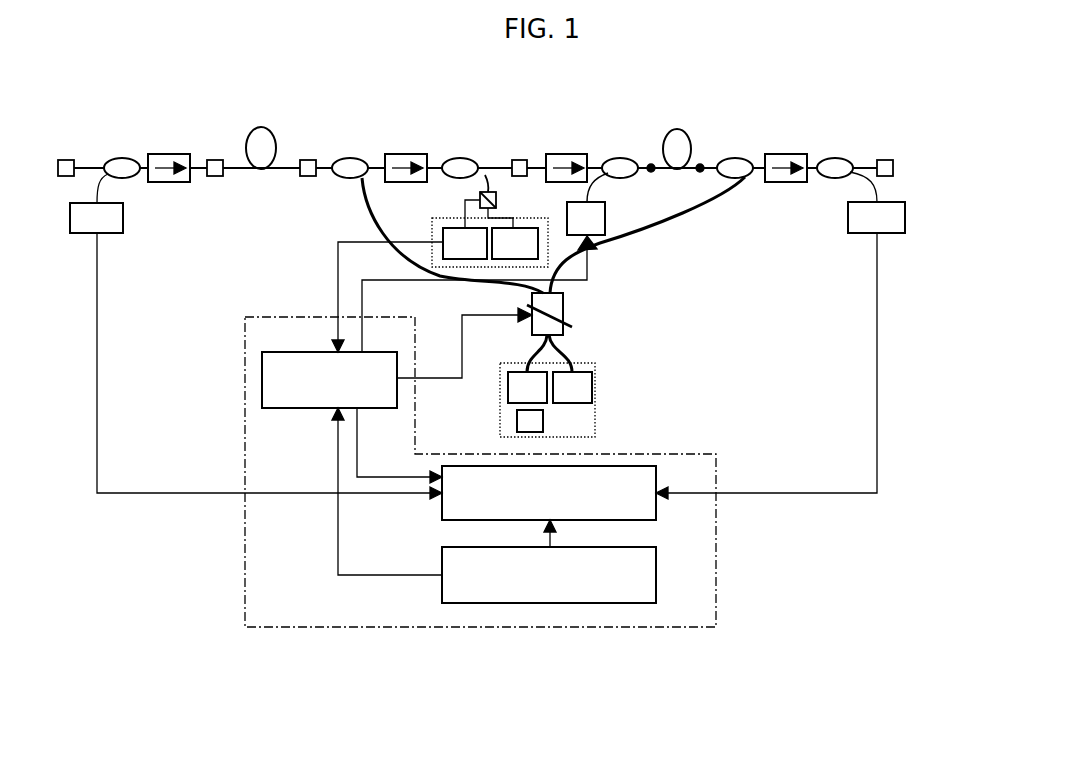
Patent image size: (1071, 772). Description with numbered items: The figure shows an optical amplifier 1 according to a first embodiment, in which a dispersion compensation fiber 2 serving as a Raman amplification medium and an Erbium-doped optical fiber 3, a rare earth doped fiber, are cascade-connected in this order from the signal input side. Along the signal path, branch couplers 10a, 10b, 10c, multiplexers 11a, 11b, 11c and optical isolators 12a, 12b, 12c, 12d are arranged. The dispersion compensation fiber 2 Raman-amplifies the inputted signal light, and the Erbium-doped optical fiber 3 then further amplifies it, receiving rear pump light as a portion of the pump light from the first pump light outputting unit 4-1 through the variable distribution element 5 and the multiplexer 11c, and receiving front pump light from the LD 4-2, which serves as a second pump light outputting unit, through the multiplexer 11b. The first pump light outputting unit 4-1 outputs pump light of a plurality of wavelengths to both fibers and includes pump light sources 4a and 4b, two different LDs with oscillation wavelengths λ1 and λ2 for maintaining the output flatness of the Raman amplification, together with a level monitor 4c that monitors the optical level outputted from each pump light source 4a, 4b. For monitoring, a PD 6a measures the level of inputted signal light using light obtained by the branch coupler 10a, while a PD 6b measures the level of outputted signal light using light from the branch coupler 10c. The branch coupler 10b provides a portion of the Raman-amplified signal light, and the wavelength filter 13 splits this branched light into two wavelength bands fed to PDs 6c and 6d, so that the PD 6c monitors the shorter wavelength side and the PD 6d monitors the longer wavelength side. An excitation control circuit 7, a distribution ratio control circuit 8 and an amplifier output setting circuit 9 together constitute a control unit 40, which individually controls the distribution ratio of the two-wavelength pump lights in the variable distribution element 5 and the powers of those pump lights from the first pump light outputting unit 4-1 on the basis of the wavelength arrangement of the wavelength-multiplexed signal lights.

The optical amplifier 1 is at (318, 655).
The dispersion compensation fiber 2 is at (276, 150).
The Erbium-doped optical fiber 3 is at (690, 140).
The first pump light outputting unit 4-1 is at (555, 385).
The LD serving as second pump light outputting unit 4-2 is at (605, 218).
The pump light source 4a is at (508, 386).
The pump light source 4b is at (573, 403).
The level monitor 4c is at (543, 421).
The variable distribution element 5 is at (563, 305).
The PD 6a is at (123, 220).
The PD 6b is at (905, 218).
The PD 6c is at (443, 242).
The PD 6d is at (520, 228).
The excitation control circuit 7 is at (656, 509).
The distribution ratio control circuit 8 is at (262, 379).
The amplifier output setting circuit 9 is at (656, 574).
The branch coupler 10a is at (114, 160).
The branch coupler 10b is at (456, 158).
The branch coupler 10c is at (838, 158).
The multiplexer 11a is at (340, 176).
The multiplexer 11b is at (615, 158).
The multiplexer 11c is at (740, 160).
The optical isolator 12a is at (168, 182).
The optical isolator 12b is at (405, 154).
The optical isolator 12c is at (566, 154).
The optical isolator 12d is at (785, 182).
The wavelength filter 13 is at (491, 191).
The control unit 40 is at (716, 561).